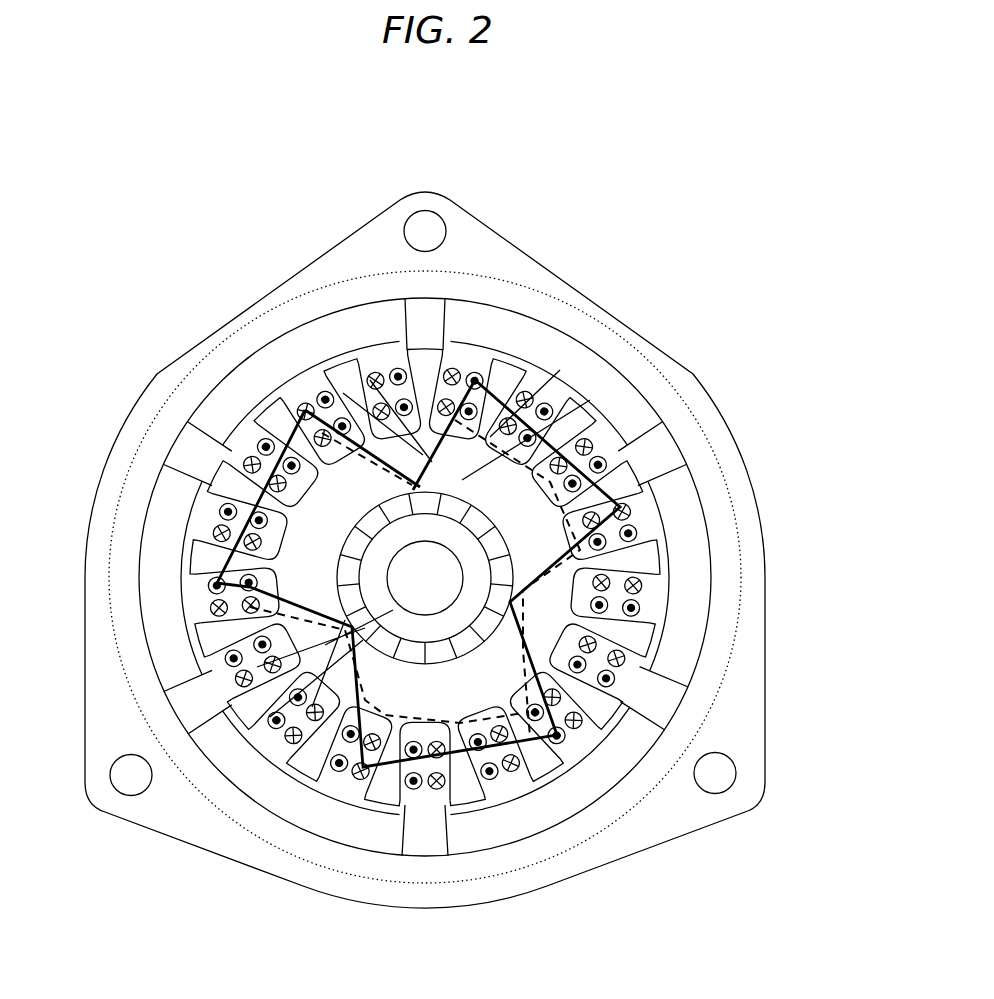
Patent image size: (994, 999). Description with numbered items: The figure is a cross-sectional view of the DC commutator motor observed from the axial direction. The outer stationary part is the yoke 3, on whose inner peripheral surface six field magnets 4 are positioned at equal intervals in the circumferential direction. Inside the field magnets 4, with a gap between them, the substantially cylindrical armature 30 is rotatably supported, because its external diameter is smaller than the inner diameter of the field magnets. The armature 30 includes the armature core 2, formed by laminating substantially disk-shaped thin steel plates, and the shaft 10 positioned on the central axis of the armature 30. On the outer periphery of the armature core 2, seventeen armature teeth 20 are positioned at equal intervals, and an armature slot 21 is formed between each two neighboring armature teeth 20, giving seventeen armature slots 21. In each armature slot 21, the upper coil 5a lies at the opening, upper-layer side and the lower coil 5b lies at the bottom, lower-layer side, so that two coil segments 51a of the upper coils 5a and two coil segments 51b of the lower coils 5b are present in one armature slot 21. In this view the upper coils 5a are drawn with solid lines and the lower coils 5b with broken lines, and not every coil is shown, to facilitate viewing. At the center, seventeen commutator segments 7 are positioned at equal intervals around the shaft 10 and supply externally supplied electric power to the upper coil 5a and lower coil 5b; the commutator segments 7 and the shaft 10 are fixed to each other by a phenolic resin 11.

The armature core 2 is at (337, 382).
The yoke 3 is at (495, 255).
The field magnet 4 is at (232, 397).
The upper coil 5a is at (512, 345).
The lower coil 5b is at (562, 353).
The commutator segment 7 is at (225, 500).
The shaft 10 is at (352, 627).
The phenolic resin 11 is at (410, 578).
The armature tooth 20 is at (573, 415).
The armature slot 21 is at (620, 517).
The armature 30 is at (393, 348).
The coil segment of upper coil 51a is at (630, 655).
The coil segment of lower coil 51b is at (597, 637).